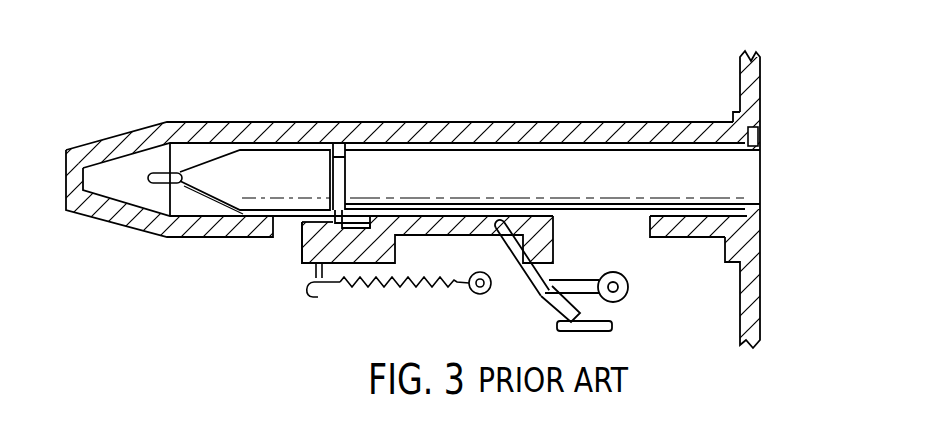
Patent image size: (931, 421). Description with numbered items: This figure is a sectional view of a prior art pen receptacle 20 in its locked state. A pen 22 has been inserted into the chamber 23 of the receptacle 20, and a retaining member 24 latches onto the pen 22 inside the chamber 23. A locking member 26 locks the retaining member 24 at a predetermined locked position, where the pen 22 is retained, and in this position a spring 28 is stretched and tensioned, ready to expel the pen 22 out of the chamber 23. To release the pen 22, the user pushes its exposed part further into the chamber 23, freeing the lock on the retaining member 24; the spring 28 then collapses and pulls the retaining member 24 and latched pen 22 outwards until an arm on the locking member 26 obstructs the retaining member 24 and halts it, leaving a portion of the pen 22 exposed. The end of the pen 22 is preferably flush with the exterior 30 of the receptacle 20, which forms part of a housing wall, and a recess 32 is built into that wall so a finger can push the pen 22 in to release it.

The receptacle 20 is at (326, 96).
The pen 22 is at (735, 173).
The chamber 23 is at (134, 160).
The retaining member 24 is at (298, 253).
The locking member 26 is at (537, 307).
The spring 28 is at (390, 288).
The exterior 30 is at (754, 88).
The recess 32 is at (756, 133).